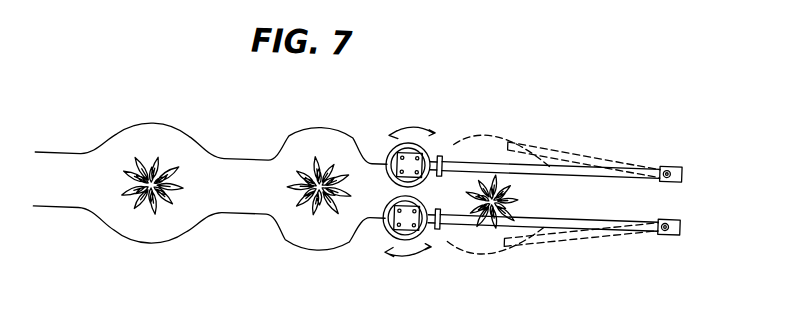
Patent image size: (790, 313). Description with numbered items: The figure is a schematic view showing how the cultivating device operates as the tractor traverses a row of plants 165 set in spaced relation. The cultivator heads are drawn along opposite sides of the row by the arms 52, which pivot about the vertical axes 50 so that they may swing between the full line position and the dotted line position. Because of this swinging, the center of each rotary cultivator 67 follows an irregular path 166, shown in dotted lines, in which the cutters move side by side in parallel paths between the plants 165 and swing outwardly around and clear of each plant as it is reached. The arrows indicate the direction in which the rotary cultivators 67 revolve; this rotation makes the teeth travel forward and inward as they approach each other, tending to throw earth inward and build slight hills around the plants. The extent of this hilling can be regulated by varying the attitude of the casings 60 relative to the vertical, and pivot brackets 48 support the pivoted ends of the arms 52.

The pivot bracket 48 is at (683, 166).
The vertical axis 50 is at (668, 162).
The arm 52 is at (575, 170).
The casing 60 is at (428, 150).
The rotary cultivator 67 is at (392, 201).
The plant 165 is at (122, 194).
The path 166 is at (239, 165).